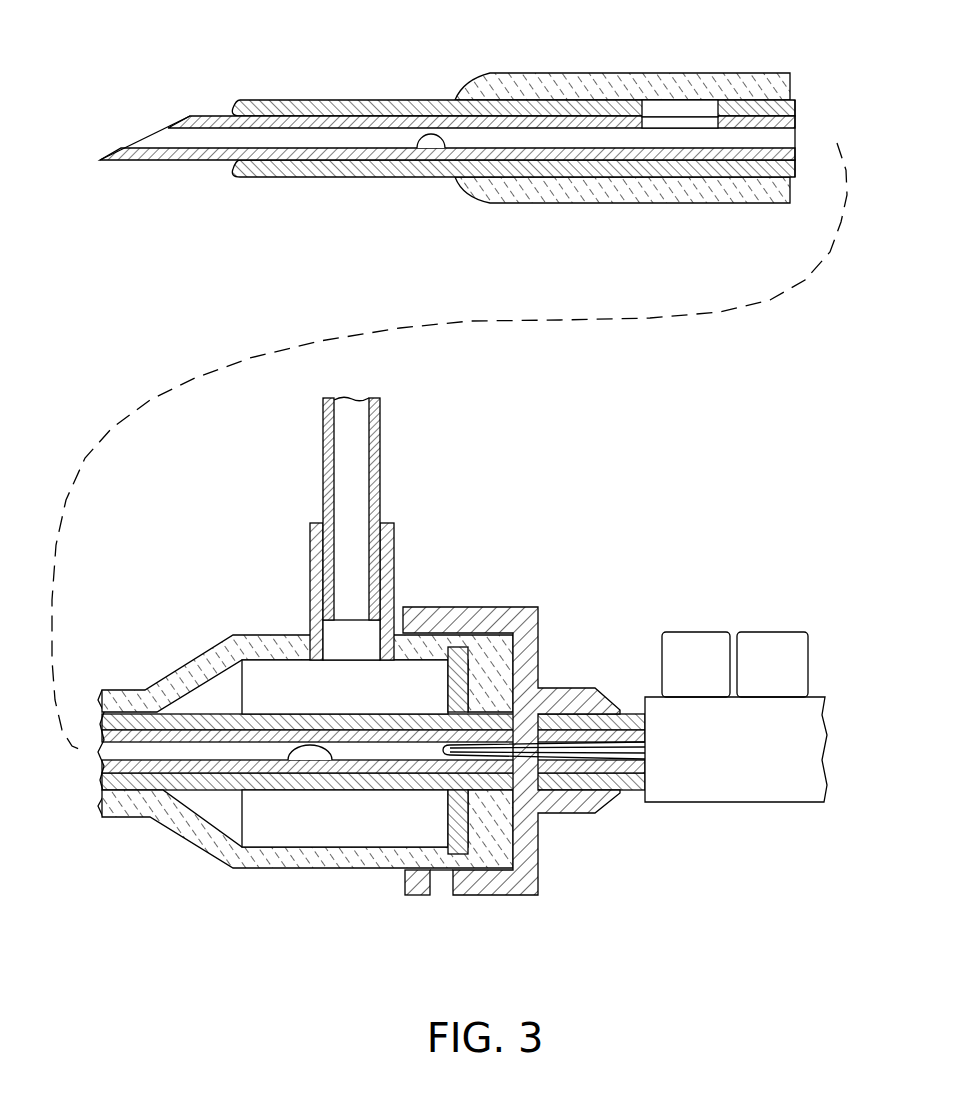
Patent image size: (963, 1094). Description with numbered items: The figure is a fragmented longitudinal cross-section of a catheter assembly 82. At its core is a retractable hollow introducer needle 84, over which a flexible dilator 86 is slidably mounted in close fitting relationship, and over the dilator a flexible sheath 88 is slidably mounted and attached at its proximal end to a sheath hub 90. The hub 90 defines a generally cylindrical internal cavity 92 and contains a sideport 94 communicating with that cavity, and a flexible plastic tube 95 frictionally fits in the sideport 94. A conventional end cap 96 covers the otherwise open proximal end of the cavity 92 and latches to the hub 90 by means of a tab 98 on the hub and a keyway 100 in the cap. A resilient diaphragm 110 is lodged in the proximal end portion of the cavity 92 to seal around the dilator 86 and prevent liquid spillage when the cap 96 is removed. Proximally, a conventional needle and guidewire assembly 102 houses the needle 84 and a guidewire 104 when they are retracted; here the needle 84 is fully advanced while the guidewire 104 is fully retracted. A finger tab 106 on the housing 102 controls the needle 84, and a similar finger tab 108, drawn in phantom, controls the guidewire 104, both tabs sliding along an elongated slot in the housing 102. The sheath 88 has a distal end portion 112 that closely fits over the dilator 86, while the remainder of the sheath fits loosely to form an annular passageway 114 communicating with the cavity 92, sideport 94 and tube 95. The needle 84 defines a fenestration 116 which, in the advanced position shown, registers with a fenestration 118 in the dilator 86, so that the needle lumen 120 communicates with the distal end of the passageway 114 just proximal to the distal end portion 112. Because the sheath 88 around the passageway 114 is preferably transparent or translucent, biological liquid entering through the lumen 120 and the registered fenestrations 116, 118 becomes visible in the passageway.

The catheter assembly 82 is at (585, 398).
The retractable hollow introducer needle 84 is at (184, 160).
The flexible dilator 86 is at (330, 178).
The flexible sheath 88 is at (129, 690).
The sheath hub 90 is at (247, 633).
The internal cavity 92 is at (283, 699).
The sideport 94 is at (395, 568).
The flexible plastic tube 95 is at (382, 452).
The end cap 96 is at (541, 632).
The tab 98 is at (438, 892).
The keyway 100 is at (407, 892).
The needle and guidewire assembly 102 is at (735, 792).
The guidewire 104 is at (425, 752).
The finger tab 106 is at (685, 632).
The finger tab 108 is at (760, 637).
The resilient diaphragm 110 is at (445, 815).
The distal end portion 112 is at (458, 64).
The passageway 114 is at (790, 180).
The fenestration 116 is at (698, 124).
The fenestration 118 is at (658, 110).
The lumen 120 is at (424, 150).